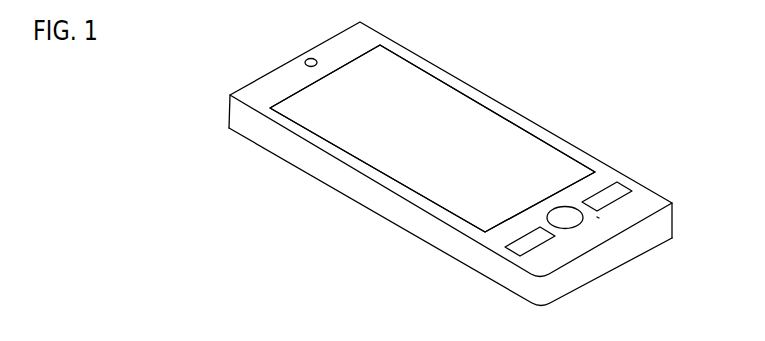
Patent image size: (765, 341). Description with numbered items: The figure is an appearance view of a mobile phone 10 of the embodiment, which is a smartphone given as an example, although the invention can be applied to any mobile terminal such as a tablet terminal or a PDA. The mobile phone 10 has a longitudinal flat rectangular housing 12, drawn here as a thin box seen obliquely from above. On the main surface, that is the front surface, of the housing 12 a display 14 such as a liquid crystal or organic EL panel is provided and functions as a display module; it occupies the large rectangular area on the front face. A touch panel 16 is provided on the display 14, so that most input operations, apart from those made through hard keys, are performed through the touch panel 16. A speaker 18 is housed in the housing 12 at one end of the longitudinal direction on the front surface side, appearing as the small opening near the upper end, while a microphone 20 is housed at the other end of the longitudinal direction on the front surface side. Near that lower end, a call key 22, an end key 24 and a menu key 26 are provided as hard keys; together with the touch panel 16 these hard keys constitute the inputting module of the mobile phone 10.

The mobile phone 10 is at (245, 30).
The housing 12 is at (350, 193).
The display 14 is at (417, 80).
The touch panel 16 is at (477, 118).
The speaker 18 is at (291, 67).
The microphone 20 is at (591, 232).
The call key 22 is at (515, 258).
The end key 24 is at (617, 182).
The menu key 26 is at (658, 235).